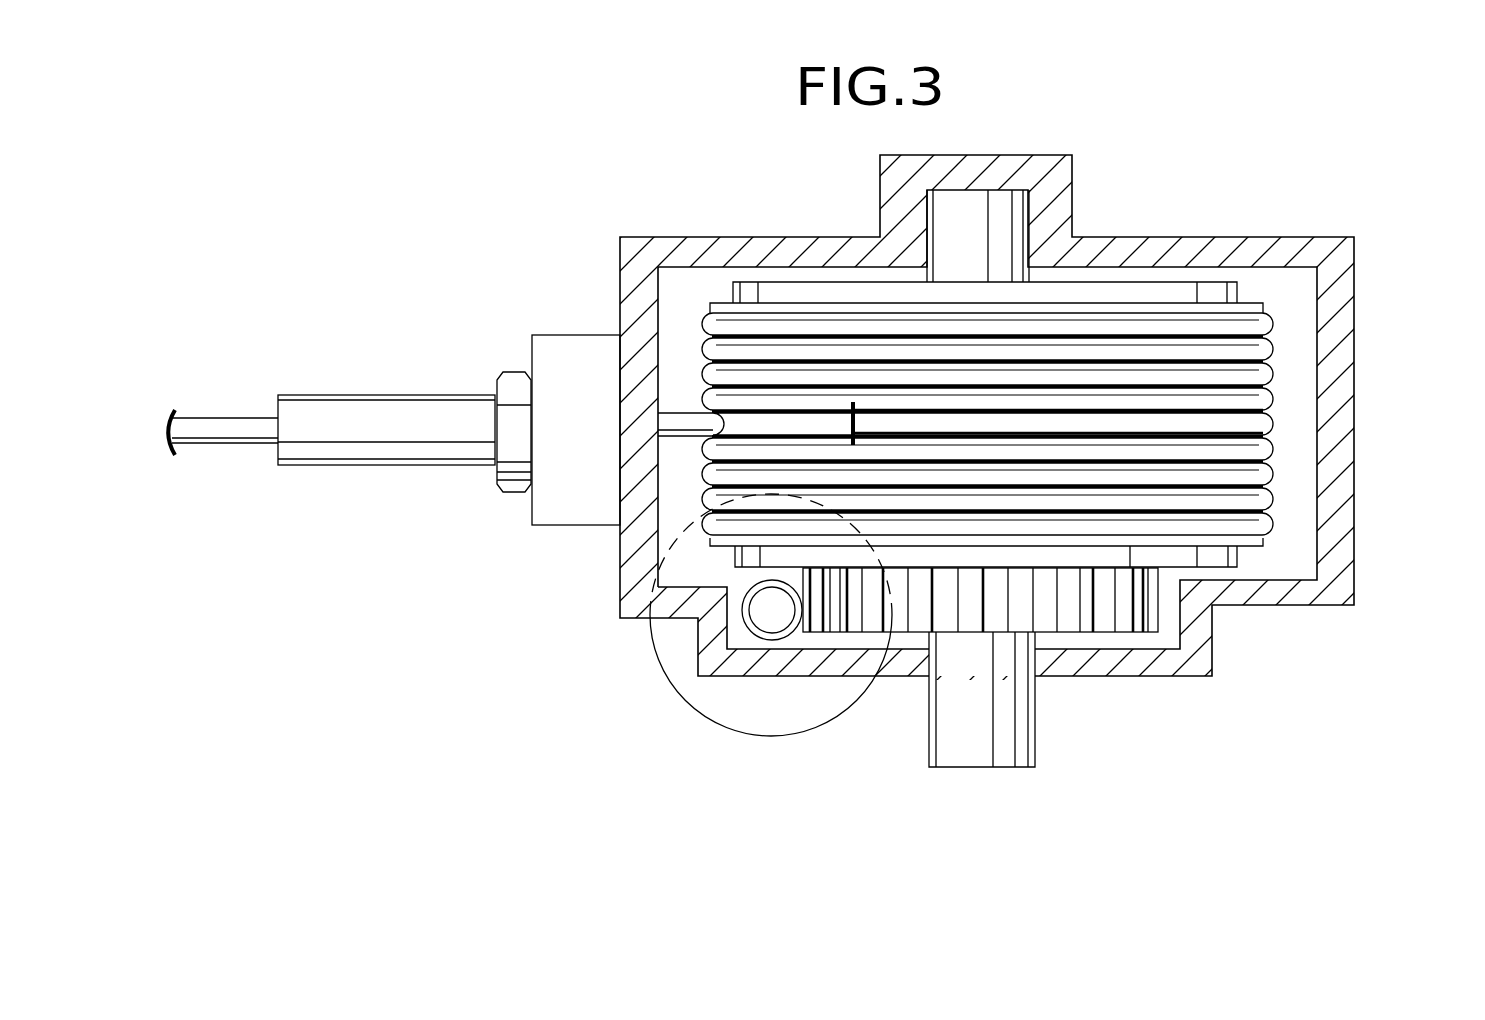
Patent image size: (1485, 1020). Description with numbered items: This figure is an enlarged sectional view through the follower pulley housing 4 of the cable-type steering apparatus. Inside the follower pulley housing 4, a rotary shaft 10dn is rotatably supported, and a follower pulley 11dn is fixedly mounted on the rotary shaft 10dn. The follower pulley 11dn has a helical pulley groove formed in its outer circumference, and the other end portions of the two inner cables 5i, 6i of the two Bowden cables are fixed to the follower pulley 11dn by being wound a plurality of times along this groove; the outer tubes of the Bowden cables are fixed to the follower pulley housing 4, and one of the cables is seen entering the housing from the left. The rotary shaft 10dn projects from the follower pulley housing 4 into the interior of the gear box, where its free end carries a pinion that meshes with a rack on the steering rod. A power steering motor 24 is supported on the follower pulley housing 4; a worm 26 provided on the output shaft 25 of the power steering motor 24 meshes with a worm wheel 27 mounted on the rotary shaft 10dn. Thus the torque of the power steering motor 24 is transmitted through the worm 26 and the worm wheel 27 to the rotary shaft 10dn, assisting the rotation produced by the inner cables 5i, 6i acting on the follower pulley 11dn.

The follower pulley housing 4 is at (1315, 250).
The inner cable 5i is at (1252, 340).
The inner cable 6i is at (1255, 492).
The follower pulley 11dn is at (1213, 285).
The rotary shaft 10dn is at (1012, 710).
The worm wheel 27 is at (1117, 603).
The power steering motor 24 is at (655, 660).
The output shaft 25 is at (772, 612).
The worm 26 is at (750, 630).